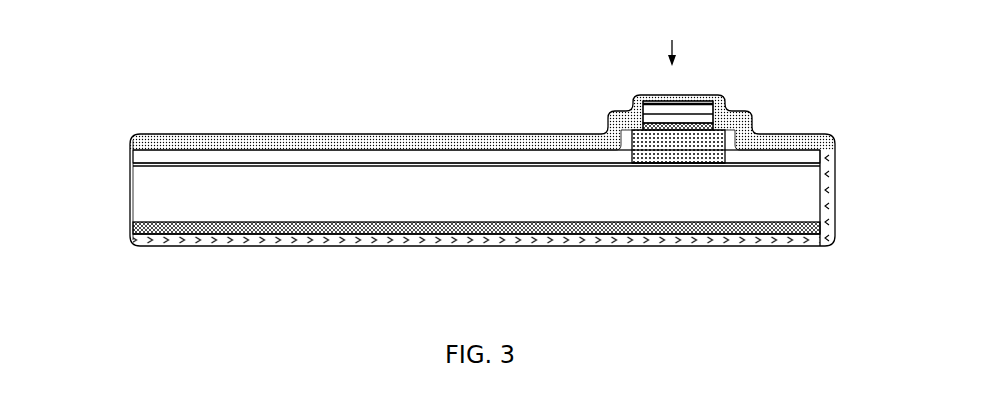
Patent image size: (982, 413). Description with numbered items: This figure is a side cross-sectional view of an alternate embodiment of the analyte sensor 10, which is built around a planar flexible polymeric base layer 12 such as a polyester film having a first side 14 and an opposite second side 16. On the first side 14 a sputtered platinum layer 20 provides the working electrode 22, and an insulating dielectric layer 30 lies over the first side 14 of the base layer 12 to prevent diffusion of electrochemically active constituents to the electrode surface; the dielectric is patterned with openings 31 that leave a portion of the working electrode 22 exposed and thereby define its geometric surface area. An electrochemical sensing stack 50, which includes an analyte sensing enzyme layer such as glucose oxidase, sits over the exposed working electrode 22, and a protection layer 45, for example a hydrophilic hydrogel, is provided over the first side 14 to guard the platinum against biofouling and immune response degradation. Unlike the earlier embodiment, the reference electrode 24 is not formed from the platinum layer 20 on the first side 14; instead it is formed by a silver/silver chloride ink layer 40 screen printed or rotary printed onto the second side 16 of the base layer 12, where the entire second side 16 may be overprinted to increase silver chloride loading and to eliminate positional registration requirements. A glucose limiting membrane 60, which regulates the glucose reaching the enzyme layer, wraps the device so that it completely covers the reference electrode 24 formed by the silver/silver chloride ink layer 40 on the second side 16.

The analyte sensor 10 is at (118, 274).
The base layer 12 is at (228, 203).
The first side 14 is at (273, 165).
The second side 16 is at (420, 224).
The platinum layer 20 is at (643, 159).
The working electrode 22 is at (678, 161).
The reference electrode 24 is at (228, 234).
The insulating dielectric layer 30 is at (350, 157).
The openings 31 is at (674, 37).
The silver/silver chloride ink layer 40 is at (325, 233).
The protection layer 45 is at (410, 147).
The electrochemical sensing stack 50 is at (656, 112).
The glucose limiting membrane 60 is at (460, 137).